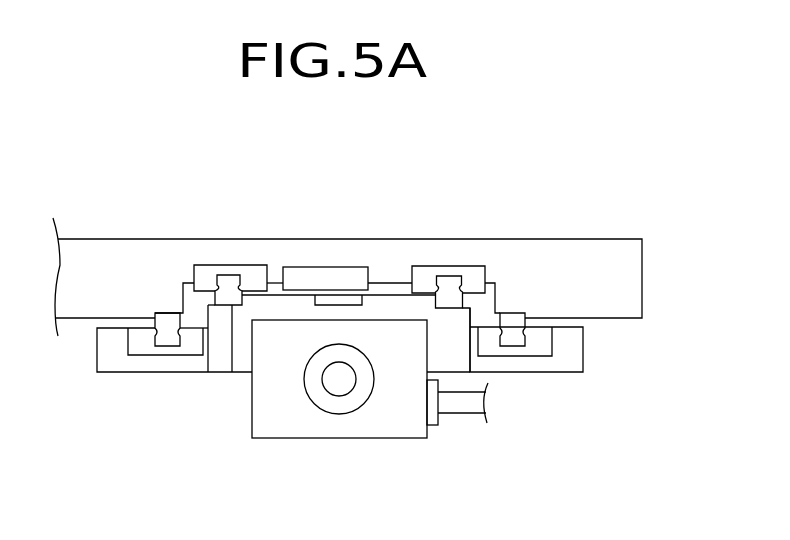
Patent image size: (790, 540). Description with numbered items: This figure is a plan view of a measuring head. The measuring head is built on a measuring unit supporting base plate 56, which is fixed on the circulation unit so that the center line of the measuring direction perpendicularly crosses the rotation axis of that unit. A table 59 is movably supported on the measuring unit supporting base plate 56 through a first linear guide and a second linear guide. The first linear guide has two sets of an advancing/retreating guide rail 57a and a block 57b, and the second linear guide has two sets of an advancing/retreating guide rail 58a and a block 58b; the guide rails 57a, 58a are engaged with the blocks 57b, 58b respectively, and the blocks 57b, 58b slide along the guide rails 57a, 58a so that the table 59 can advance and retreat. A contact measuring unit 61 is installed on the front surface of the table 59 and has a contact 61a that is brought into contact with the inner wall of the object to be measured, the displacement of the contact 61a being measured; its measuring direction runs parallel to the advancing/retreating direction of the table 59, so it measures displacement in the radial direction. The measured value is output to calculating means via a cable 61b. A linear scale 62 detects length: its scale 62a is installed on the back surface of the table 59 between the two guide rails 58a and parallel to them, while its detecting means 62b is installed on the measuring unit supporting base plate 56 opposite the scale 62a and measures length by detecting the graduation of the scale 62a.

The measuring unit supporting base plate 56 is at (646, 286).
The advancing/retreating guide rail 57a is at (167, 343).
The block 57b is at (140, 347).
The advancing/retreating guide rail 58a is at (232, 305).
The block 58b is at (211, 268).
The table 59 is at (584, 357).
The contact measuring unit 61 is at (418, 414).
The contact 61a is at (339, 388).
The cable 61b is at (463, 417).
The linear scale 62 is at (339, 207).
The scale 62a is at (317, 241).
The detecting means 62b is at (356, 268).